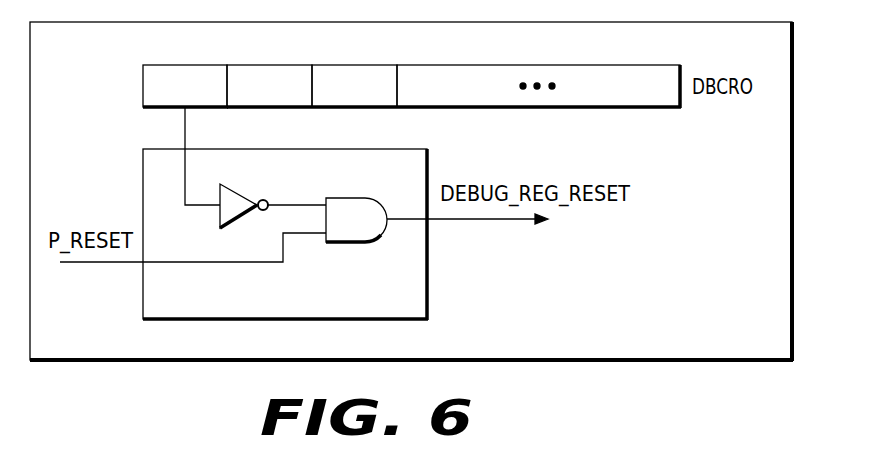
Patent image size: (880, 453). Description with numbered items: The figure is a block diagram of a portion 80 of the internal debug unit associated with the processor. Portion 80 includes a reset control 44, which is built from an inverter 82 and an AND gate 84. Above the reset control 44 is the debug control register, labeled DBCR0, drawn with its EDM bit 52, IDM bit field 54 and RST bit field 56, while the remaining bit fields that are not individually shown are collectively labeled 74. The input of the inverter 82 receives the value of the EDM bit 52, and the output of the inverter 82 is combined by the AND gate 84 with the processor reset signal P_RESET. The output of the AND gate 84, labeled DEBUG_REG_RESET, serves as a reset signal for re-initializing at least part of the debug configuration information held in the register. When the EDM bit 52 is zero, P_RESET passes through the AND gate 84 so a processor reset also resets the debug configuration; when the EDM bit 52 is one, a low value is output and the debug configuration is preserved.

The EDM bit 52 is at (190, 64).
The IDM bit field 54 is at (275, 64).
The RST bit field 56 is at (358, 64).
The bit fields not shown 74 is at (571, 64).
The inverter 82 is at (238, 192).
The AND gate 84 is at (356, 198).
The reset control 44 is at (410, 312).
The portion of internal debug unit 80 is at (779, 332).